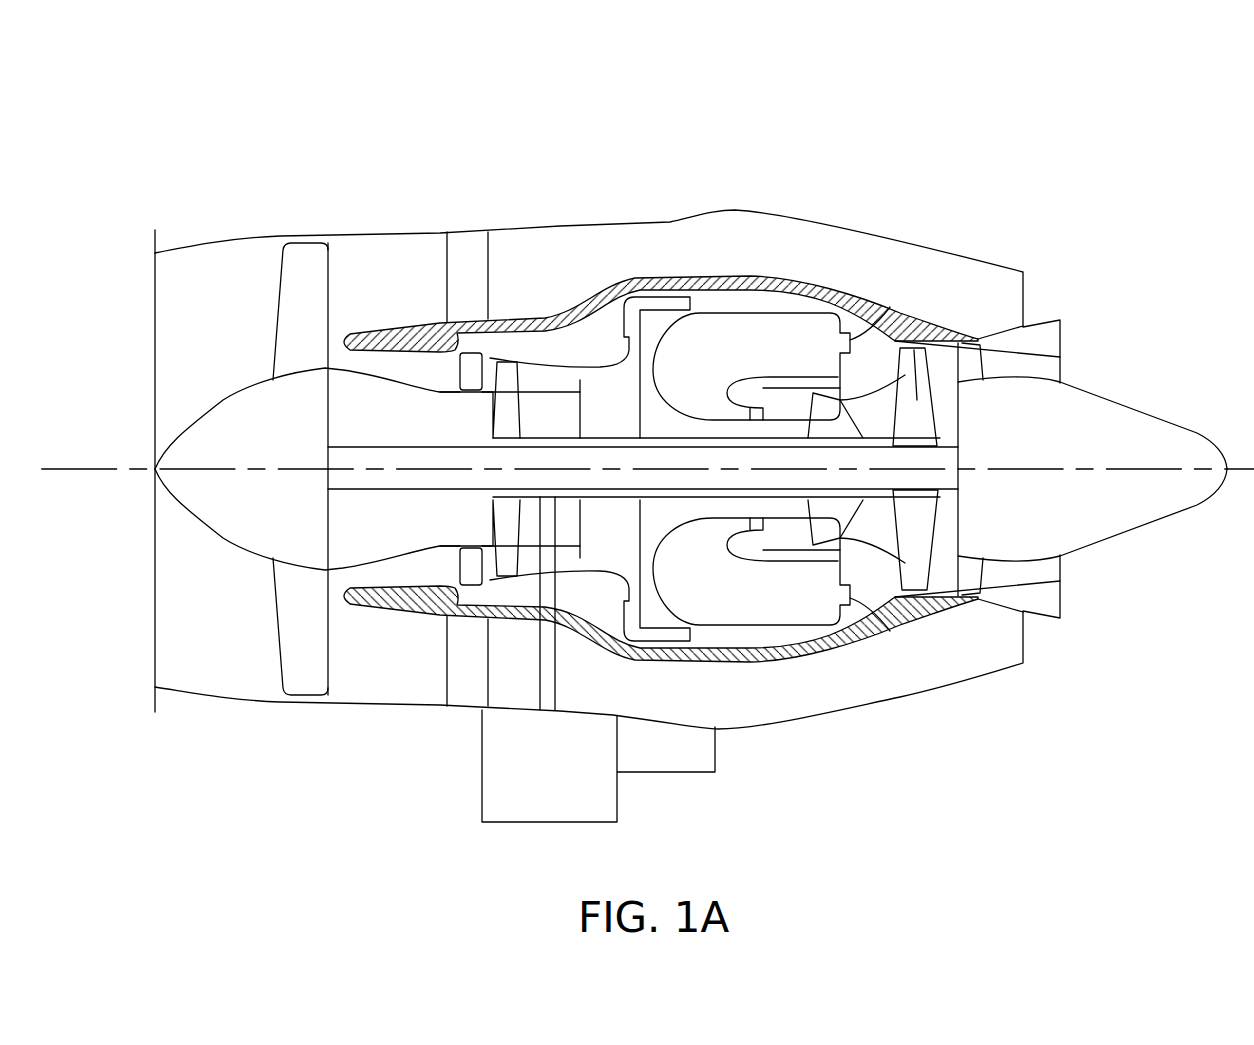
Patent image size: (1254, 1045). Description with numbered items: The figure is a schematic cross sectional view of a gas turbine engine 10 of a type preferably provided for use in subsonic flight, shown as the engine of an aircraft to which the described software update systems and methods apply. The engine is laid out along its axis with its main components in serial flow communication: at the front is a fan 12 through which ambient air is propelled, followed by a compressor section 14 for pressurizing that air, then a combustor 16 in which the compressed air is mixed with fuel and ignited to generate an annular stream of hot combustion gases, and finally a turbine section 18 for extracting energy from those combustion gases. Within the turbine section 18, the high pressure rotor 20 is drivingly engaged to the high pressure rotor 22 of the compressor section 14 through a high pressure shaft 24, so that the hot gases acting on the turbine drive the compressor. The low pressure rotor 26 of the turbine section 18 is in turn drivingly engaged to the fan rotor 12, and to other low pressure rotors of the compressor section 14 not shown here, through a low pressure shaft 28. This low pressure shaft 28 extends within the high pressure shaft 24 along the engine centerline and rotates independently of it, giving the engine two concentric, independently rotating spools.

The gas turbine engine 10 is at (893, 147).
The fan 12 is at (297, 617).
The compressor section 14 is at (540, 373).
The combustor 16 is at (745, 333).
The turbine section 18 is at (883, 598).
The high pressure rotor 20 is at (880, 337).
The high pressure rotor 22 is at (610, 393).
The high pressure shaft 24 is at (753, 417).
The low pressure rotor 26 is at (840, 397).
The low pressure shaft 28 is at (387, 493).